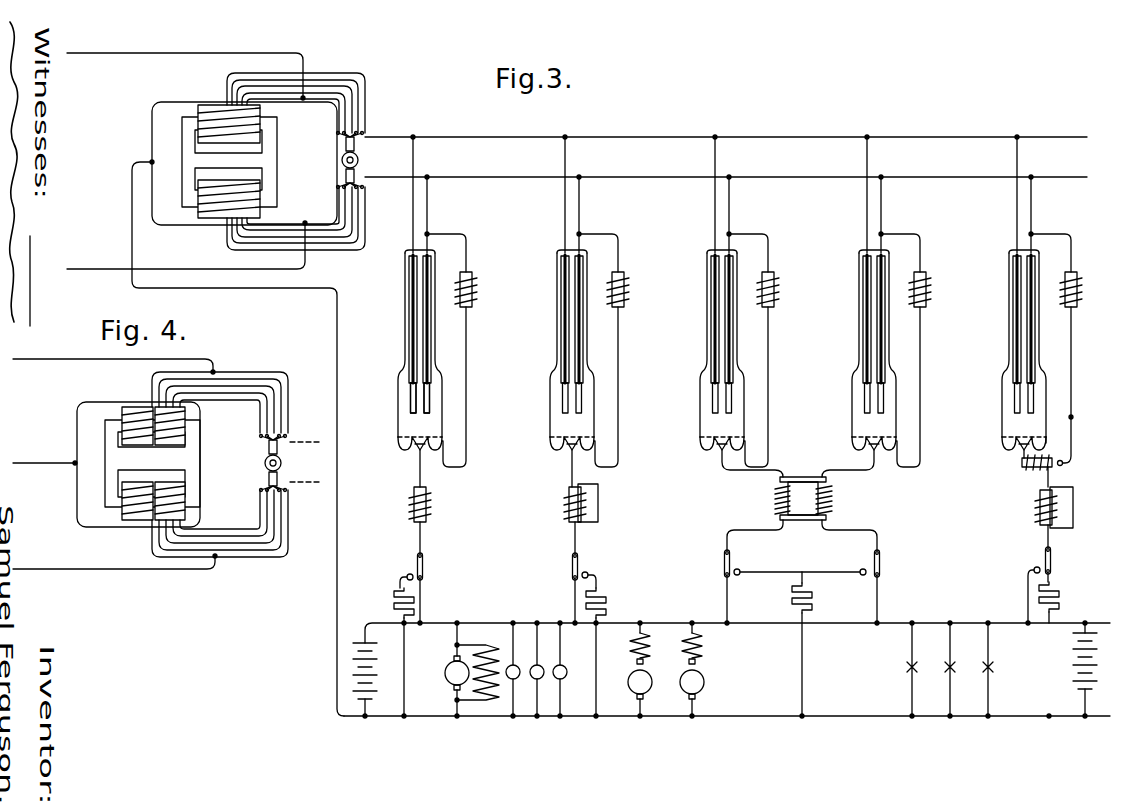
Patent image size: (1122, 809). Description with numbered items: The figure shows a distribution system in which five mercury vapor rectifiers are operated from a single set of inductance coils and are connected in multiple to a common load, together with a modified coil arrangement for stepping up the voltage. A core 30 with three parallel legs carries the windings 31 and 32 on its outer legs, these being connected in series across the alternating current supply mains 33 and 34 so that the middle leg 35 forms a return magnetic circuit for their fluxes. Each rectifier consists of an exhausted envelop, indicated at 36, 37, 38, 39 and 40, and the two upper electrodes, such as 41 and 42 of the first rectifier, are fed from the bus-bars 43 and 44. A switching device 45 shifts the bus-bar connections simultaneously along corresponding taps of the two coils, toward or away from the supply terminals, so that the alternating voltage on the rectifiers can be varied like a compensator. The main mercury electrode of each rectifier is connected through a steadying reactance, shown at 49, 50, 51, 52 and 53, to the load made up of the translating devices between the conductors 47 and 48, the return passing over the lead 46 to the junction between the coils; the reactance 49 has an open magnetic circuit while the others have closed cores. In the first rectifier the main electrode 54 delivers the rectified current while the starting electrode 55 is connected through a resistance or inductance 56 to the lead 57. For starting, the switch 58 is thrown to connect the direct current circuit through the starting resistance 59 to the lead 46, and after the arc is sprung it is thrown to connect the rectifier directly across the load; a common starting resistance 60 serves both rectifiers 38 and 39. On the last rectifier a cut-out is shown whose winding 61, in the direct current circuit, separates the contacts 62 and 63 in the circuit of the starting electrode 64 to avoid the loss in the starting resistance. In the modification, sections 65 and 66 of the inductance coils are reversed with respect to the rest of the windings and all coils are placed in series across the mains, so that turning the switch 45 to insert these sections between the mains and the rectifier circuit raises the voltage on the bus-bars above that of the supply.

In FIG. 3, the core 30 is at (271, 141).
In FIG. 3, the inductance coil winding 31 is at (212, 105).
In FIG. 3, the inductance coil winding 32 is at (217, 213).
In FIG. 3, the alternating current supply main 33 is at (145, 54).
In FIG. 4, the alternating current supply main 33 is at (60, 360).
In FIG. 3, the alternating current supply main 34 is at (90, 263).
In FIG. 4, the alternating current supply main 34 is at (54, 562).
In FIG. 3, the middle leg 35 is at (241, 163).
In FIG. 3, the rectifier envelop 36 is at (410, 386).
In FIG. 3, the rectifier envelop 37 is at (554, 384).
In FIG. 3, the rectifier envelop 38 is at (704, 385).
In FIG. 3, the rectifier envelop 39 is at (856, 384).
In FIG. 3, the rectifier envelop 40 is at (1006, 381).
In FIG. 3, the upper electrode 41 is at (416, 402).
In FIG. 3, the upper electrode 42 is at (425, 406).
In FIG. 3, the rectifier bus-bar 43 is at (462, 137).
In FIG. 4, the rectifier bus-bar 43 is at (308, 447).
In FIG. 3, the rectifier bus-bar 44 is at (465, 177).
In FIG. 4, the rectifier bus-bar 44 is at (320, 479).
In FIG. 3, the switching device 45 is at (366, 159).
In FIG. 4, the switching device 45 is at (285, 462).
In FIG. 3, the lead 46 is at (338, 324).
In FIG. 3, the load conductor 47 is at (895, 622).
In FIG. 3, the load conductor 48 is at (885, 717).
In FIG. 3, the reactance 49 is at (430, 508).
In FIG. 3, the reactance 50 is at (599, 504).
In FIG. 3, the reactance 51 is at (777, 501).
In FIG. 3, the reactance 52 is at (832, 501).
In FIG. 3, the reactance 53 is at (1042, 504).
In FIG. 3, the main mercury electrode 54 is at (402, 468).
In FIG. 3, the starting electrode 55 is at (443, 441).
In FIG. 3, the starting resistance or inductance 56 is at (469, 293).
In FIG. 3, the alternating current supply lead 57 is at (428, 196).
In FIG. 3, the switch 58 is at (428, 560).
In FIG. 3, the starting resistance 59 is at (399, 590).
In FIG. 3, the common starting resistance 60 is at (791, 597).
In FIG. 3, the cut-out winding 61 is at (1032, 471).
In FIG. 3, the cut-out contact 62 is at (1062, 466).
In FIG. 3, the cut-out contact 63 is at (1064, 466).
In FIG. 3, the starting electrode 64 is at (1047, 437).
In FIG. 4, the reversed coil section 65 is at (186, 414).
In FIG. 4, the reversed coil section 66 is at (186, 517).